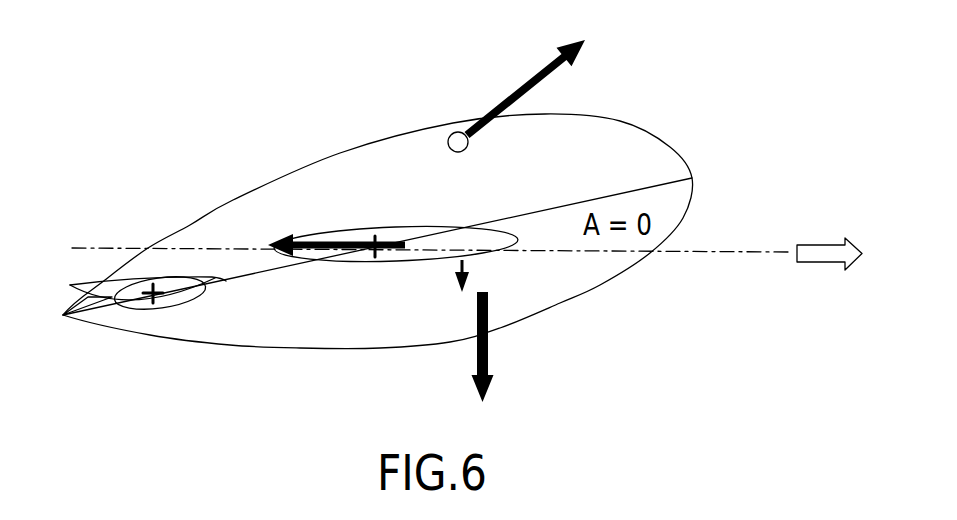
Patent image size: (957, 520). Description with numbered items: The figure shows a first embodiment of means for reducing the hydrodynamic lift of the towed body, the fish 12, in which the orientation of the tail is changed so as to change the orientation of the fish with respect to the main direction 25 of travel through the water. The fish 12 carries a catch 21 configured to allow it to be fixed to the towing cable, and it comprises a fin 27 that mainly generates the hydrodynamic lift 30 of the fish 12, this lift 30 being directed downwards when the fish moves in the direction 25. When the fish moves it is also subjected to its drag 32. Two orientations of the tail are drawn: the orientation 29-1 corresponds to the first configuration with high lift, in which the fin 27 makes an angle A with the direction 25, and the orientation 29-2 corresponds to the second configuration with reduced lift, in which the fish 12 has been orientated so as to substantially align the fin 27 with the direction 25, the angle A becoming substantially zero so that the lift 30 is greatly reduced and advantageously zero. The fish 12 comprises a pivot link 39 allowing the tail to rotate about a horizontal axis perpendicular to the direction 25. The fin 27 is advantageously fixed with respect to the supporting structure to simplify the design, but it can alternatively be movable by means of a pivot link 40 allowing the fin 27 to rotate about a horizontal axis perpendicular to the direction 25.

The fish 12 is at (363, 110).
The catch 21 is at (458, 132).
The direction 25 is at (818, 243).
The fin 27 is at (379, 228).
The orientation of the tail 29-1 is at (108, 313).
The orientation of the tail 29-2 is at (173, 300).
The hydrodynamic lift 30 is at (470, 270).
The drag 32 is at (307, 233).
The pivot link 39 is at (152, 290).
The pivot link 40 is at (376, 259).